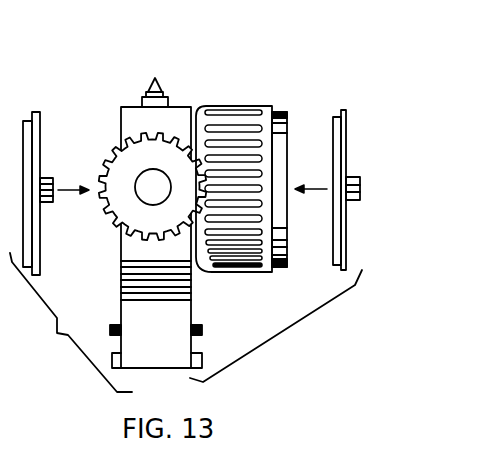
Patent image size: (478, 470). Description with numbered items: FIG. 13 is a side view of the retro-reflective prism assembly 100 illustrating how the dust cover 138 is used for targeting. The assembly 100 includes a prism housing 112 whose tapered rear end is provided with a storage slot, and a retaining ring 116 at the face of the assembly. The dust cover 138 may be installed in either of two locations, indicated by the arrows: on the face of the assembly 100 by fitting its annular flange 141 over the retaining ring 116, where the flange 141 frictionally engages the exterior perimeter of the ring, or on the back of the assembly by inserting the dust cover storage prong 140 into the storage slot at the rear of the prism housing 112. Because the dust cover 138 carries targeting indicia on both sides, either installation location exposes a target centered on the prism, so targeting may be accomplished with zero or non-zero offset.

The retro-reflective prism assembly 100 is at (235, 89).
The prism housing 112 is at (218, 107).
The retaining ring 116 is at (280, 110).
The dust cover 138 is at (40, 117).
The dust cover storage prong 140 is at (44, 178).
The annular flange 141 is at (333, 118).